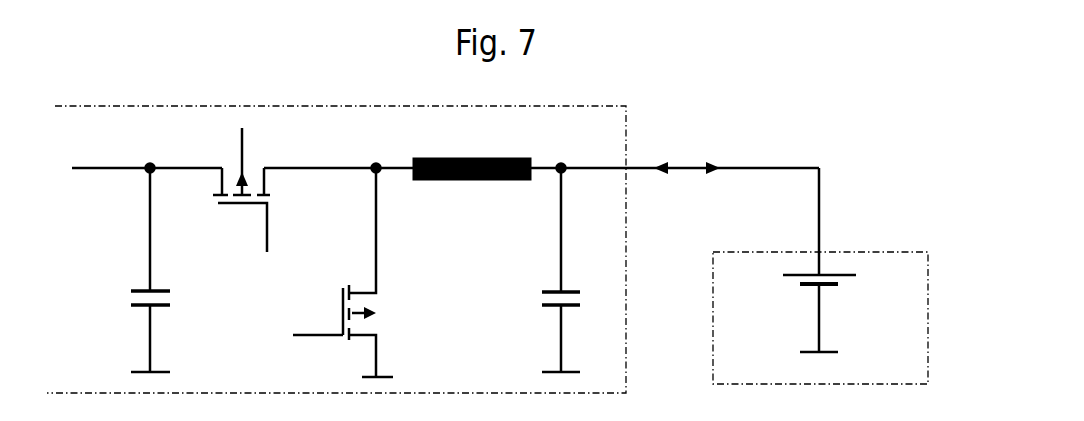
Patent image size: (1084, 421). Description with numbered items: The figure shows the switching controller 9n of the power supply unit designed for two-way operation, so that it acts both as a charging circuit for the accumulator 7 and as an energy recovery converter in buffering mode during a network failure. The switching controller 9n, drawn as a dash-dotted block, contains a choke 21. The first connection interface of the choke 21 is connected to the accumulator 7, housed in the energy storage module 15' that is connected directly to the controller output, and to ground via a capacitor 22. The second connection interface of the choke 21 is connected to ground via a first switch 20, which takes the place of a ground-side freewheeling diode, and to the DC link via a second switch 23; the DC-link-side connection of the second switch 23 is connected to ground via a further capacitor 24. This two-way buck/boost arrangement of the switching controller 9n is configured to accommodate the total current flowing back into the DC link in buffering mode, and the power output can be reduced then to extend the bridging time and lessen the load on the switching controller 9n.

The switching controller 9n is at (628, 138).
The second switch 23 is at (236, 203).
The further capacitor 24 is at (141, 306).
The first switch 20 is at (340, 322).
The choke 21 is at (478, 180).
The capacitor 22 is at (552, 306).
The energy storage module 15' is at (820, 278).
The accumulator 7 is at (835, 286).